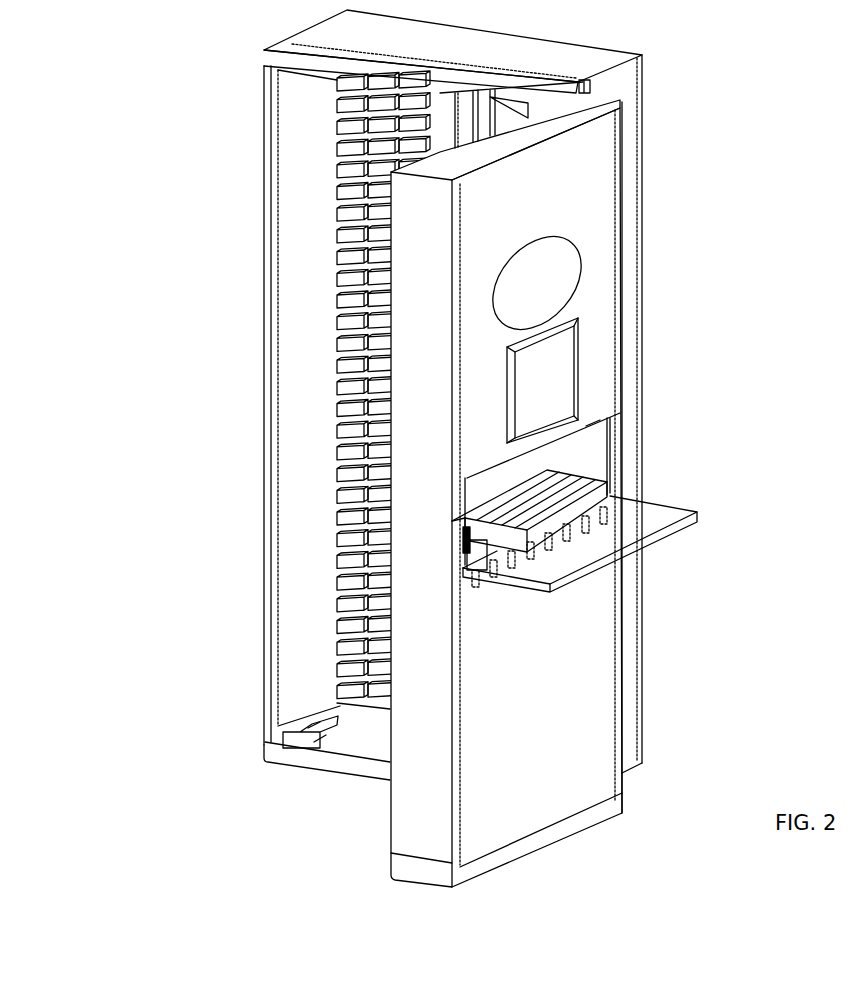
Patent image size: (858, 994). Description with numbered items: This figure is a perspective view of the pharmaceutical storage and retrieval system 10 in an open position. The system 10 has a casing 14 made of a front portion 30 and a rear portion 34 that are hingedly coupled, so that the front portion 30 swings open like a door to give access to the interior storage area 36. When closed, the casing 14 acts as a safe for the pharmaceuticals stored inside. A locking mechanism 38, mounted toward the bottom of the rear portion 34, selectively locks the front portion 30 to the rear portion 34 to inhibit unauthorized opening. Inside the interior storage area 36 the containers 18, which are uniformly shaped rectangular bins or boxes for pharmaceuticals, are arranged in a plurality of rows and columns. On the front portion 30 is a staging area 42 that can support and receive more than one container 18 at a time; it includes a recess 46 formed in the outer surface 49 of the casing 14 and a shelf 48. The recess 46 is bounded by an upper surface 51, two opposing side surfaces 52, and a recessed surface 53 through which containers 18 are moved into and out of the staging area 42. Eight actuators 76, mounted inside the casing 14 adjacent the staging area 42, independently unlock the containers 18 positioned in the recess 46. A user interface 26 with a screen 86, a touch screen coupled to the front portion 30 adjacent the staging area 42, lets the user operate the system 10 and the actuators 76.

The pharmaceutical storage and retrieval system 10 is at (116, 110).
The casing 14 is at (612, 53).
The containers 18 is at (340, 608).
The user interface 26 is at (582, 366).
The front portion 30 is at (600, 747).
The rear portion 34 is at (272, 80).
The interior storage area 36 is at (291, 246).
The locking mechanism 38 is at (285, 737).
The staging area 42 is at (637, 411).
The recess 46 is at (480, 493).
The shelf 48 is at (678, 528).
The outer surface 49 is at (597, 668).
The upper surface 51 is at (588, 425).
The side surfaces 52 is at (601, 446).
The recessed surface 53 is at (493, 477).
The actuators 76 is at (573, 543).
The screen 86 is at (528, 379).